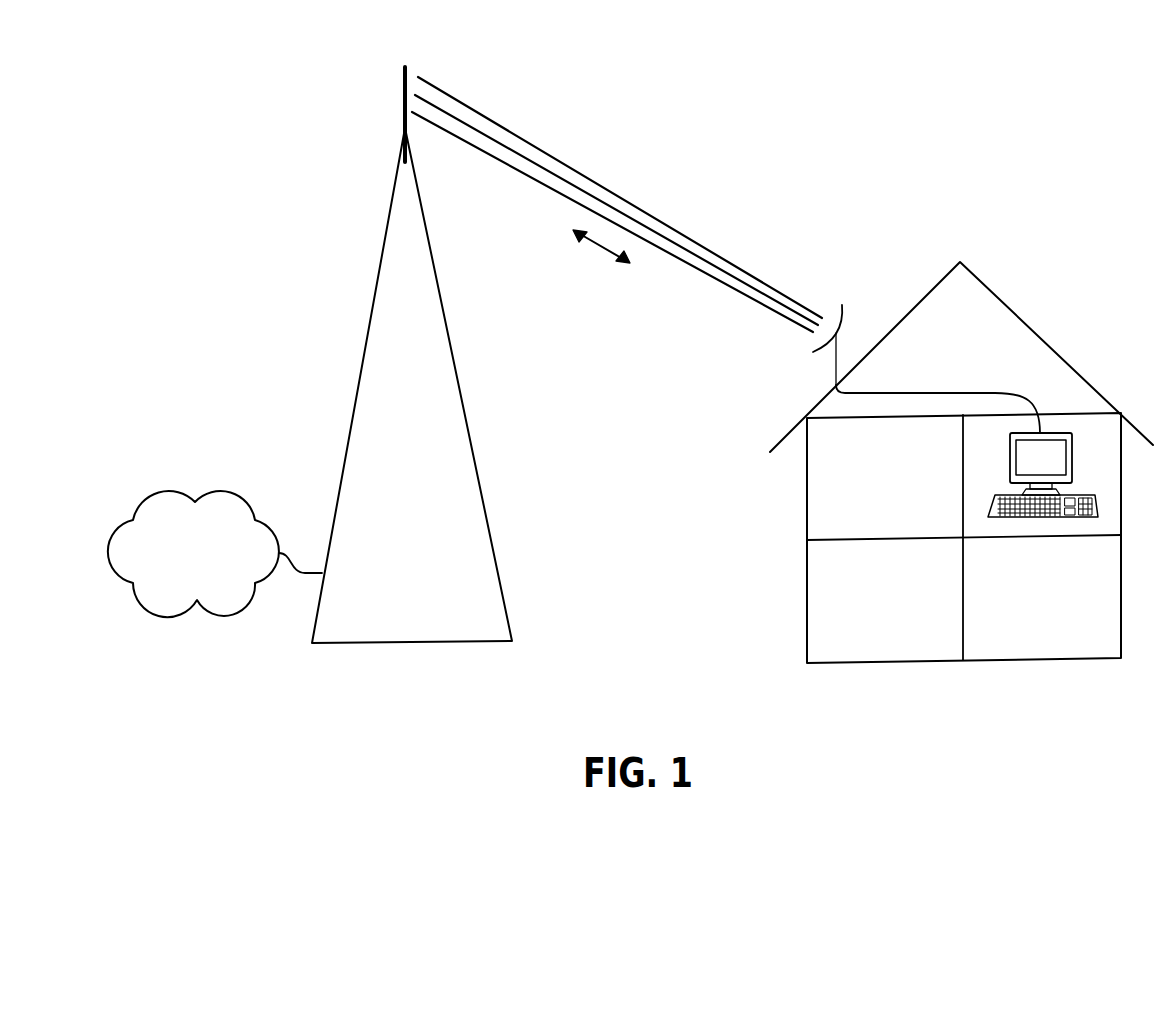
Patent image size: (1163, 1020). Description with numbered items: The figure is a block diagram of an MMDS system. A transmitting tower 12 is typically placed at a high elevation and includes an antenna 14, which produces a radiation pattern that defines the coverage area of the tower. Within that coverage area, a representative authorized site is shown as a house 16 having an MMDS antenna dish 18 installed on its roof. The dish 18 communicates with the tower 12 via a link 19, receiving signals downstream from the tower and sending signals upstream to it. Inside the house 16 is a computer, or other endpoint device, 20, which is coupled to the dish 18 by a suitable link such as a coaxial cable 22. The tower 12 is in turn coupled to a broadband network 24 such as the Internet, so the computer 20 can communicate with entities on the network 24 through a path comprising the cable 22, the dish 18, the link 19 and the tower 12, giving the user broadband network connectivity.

The transmitting tower 12 is at (477, 460).
The antenna 14 is at (403, 75).
The house 16 is at (1122, 593).
The MMDS antenna dish 18 is at (843, 313).
The link 19 is at (600, 247).
The computer 20 is at (1070, 460).
The coaxial cable 22 is at (957, 393).
The broadband network 24 is at (225, 488).